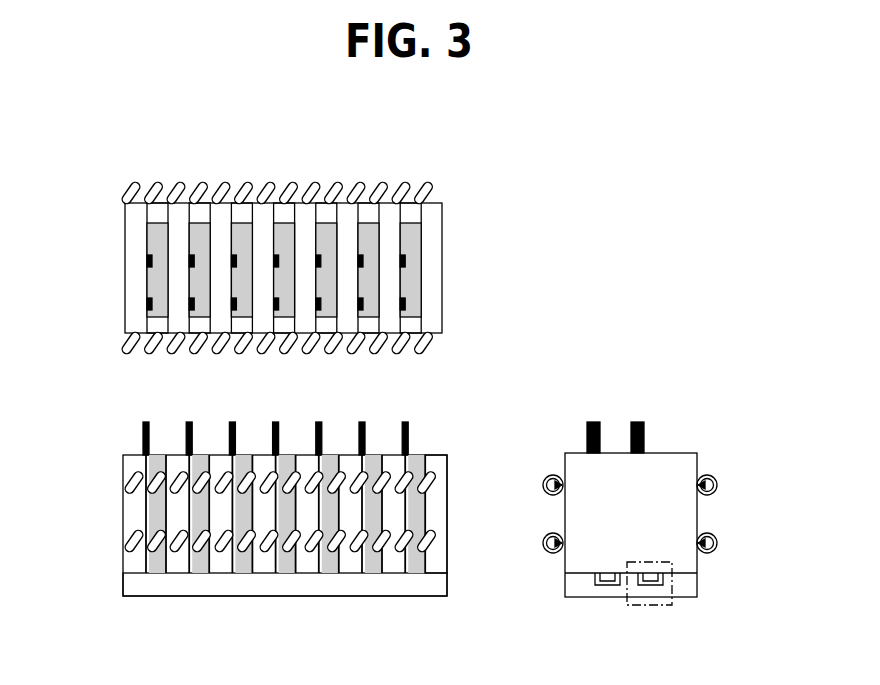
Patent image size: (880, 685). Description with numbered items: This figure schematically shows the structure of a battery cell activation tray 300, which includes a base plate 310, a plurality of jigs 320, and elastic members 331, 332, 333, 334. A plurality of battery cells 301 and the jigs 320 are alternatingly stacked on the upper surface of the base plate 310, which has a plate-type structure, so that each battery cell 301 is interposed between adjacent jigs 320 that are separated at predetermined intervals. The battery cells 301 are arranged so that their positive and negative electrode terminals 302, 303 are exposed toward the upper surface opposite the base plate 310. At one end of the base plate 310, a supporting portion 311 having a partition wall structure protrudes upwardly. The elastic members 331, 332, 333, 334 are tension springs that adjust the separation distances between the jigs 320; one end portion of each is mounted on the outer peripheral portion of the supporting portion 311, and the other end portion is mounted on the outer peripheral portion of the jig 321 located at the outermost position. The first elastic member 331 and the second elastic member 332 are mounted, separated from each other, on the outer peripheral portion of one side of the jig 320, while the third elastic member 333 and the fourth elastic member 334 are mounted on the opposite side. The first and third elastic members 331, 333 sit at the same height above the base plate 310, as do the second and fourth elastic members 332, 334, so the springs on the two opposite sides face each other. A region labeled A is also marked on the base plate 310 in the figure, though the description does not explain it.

The battery cell activation tray 300 is at (132, 170).
The battery cell 301 is at (200, 563).
The positive electrode terminal 302 is at (600, 421).
The negative electrode terminal 303 is at (645, 421).
The base plate 310 is at (327, 597).
The supporting portion 311 is at (122, 519).
The jig 320 is at (304, 436).
The outermost jig 321 is at (434, 455).
The first elastic member 331 is at (543, 544).
The second elastic member 332 is at (545, 479).
The third elastic member 333 is at (718, 540).
The fourth elastic member 334 is at (717, 481).
The region A is at (661, 606).